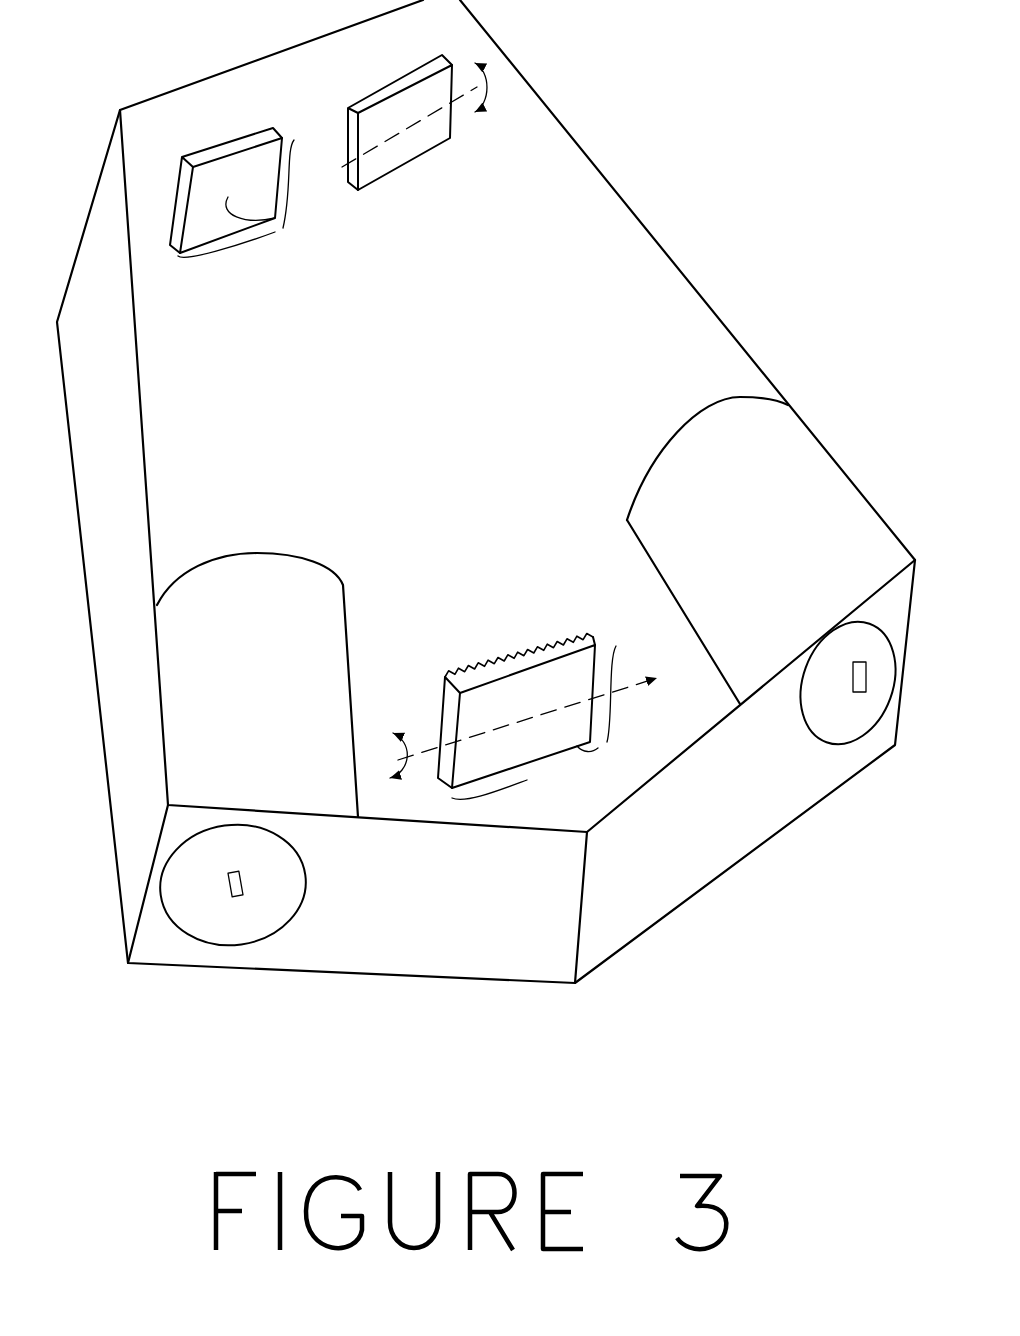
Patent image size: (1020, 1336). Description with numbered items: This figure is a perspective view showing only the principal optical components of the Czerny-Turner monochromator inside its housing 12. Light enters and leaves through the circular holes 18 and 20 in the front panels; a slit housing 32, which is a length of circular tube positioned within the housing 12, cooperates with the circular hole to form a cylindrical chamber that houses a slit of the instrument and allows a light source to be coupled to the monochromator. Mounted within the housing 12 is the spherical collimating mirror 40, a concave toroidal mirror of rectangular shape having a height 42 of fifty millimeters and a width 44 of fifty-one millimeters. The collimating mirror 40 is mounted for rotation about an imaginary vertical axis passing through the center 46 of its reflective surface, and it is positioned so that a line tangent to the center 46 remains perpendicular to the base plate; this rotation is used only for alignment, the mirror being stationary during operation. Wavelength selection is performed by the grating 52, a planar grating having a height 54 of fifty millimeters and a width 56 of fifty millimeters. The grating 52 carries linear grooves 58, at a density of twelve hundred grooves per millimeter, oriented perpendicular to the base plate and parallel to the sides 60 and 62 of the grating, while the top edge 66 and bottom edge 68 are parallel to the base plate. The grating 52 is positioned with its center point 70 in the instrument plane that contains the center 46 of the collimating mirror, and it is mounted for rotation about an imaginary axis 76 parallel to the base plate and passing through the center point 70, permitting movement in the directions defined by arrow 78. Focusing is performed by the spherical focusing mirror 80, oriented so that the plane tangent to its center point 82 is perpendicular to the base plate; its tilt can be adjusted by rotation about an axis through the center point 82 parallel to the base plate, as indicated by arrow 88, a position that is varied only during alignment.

The housing 12 is at (557, 116).
The circular hole 18 is at (285, 900).
The circular hole 20 is at (805, 722).
The slit housing 32 is at (350, 638).
The spherical collimating mirror 40 is at (195, 150).
The height 42 is at (309, 184).
The width 44 is at (226, 261).
The center 46 is at (275, 218).
The grating 52 is at (527, 702).
The height 54 is at (528, 719).
The width 56 is at (500, 797).
The grooves 58 is at (468, 672).
The side 60 is at (448, 768).
The side 62 is at (613, 644).
The top edge 66 is at (567, 647).
The bottom edge 68 is at (598, 750).
The center point 70 is at (523, 718).
The imaginary axis 76 is at (428, 765).
The arrow 78 is at (425, 755).
The spherical focusing mirror 80 is at (370, 92).
The center point 82 is at (405, 128).
The arrow 88 is at (497, 87).